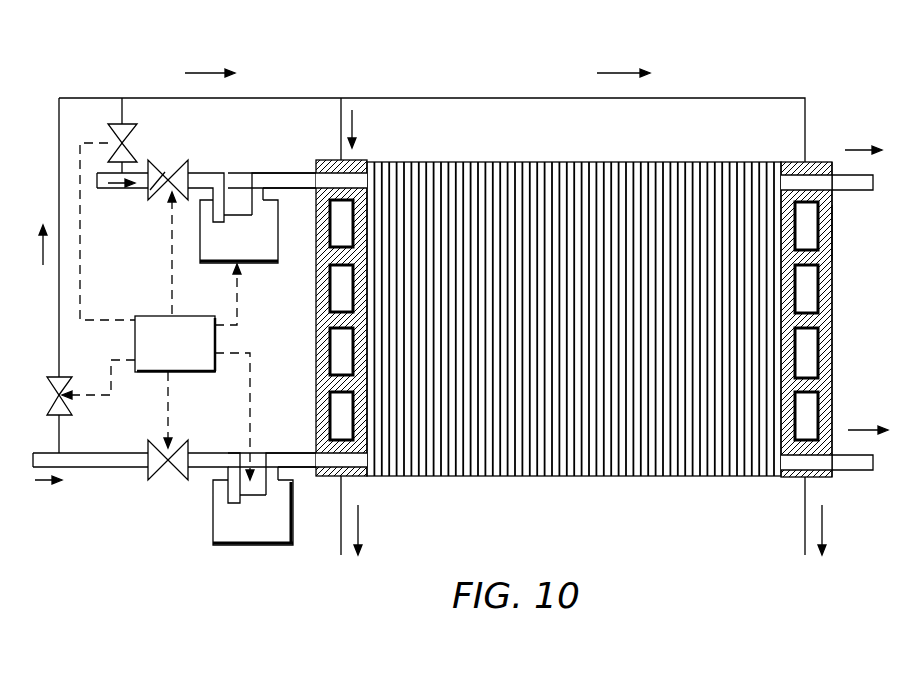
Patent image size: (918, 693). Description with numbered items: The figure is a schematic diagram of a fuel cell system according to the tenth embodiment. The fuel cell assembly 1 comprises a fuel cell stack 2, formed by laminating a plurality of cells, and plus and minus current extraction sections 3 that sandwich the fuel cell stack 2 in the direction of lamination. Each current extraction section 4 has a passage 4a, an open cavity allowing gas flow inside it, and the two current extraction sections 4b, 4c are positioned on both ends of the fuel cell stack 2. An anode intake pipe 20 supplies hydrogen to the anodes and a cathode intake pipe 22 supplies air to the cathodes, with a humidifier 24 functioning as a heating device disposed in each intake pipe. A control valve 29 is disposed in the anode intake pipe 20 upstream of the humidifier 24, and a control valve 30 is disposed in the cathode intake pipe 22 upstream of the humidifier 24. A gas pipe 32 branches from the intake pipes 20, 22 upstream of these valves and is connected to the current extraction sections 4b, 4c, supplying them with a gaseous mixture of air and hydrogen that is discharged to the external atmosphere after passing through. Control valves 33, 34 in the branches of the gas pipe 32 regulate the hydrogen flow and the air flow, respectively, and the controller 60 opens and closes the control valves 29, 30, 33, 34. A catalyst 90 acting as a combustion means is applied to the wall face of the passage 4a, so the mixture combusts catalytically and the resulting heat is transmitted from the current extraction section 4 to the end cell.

The fuel cell assembly 1 is at (525, 155).
The fuel cell stack 2 is at (600, 185).
The current extraction sections 3 is at (815, 162).
The current extraction section 4 is at (838, 375).
The passage 4a is at (343, 352).
The current extraction section 4b is at (318, 298).
The current extraction section 4c is at (834, 238).
The anode intake pipe 20 is at (210, 176).
The cathode intake pipe 22 is at (112, 468).
The humidifier 24 is at (200, 257).
The control valve 29 is at (158, 195).
The control valve 30 is at (182, 440).
The gas pipe 32 is at (72, 98).
The control valve 33 is at (135, 127).
The control valve 34 is at (64, 380).
The controller 60 is at (158, 311).
The catalyst 90 is at (328, 234).